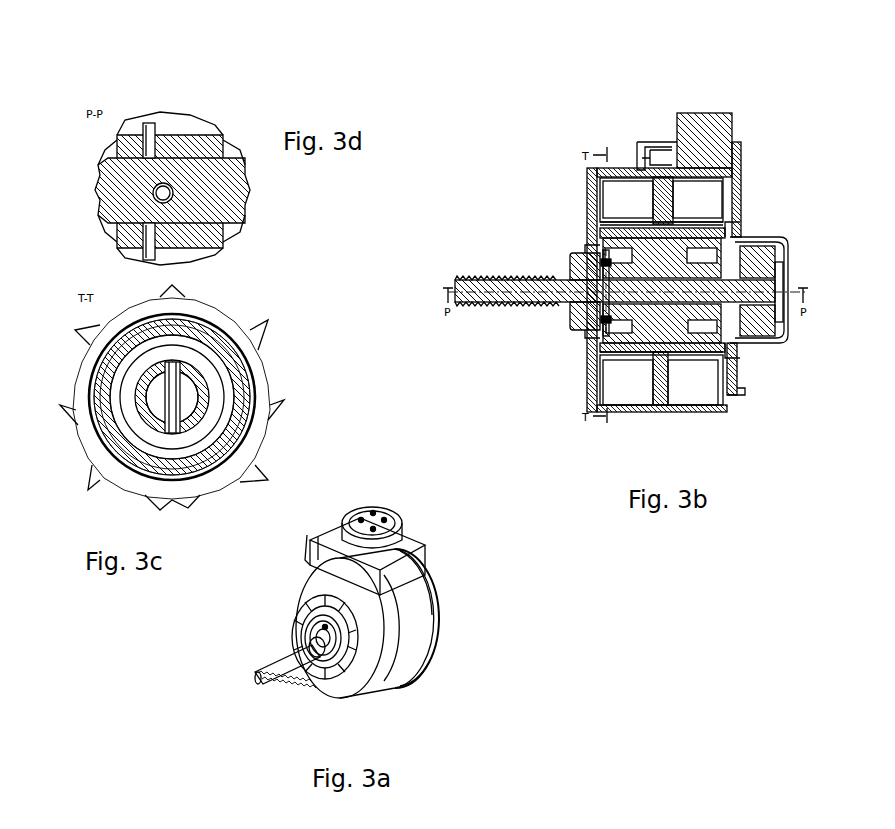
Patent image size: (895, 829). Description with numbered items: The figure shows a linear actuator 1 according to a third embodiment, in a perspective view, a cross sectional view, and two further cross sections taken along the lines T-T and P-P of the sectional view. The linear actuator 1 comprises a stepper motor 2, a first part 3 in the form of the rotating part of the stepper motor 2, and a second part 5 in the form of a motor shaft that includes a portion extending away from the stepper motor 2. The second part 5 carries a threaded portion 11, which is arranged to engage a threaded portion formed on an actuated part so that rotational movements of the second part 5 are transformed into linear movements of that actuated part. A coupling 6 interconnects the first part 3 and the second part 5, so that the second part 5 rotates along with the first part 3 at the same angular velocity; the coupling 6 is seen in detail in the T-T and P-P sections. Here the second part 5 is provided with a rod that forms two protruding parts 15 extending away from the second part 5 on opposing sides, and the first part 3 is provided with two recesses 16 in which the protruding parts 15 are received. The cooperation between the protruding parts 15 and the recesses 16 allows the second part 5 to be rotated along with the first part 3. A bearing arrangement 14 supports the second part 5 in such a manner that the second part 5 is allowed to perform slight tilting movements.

In FIG. 3B, the linear actuator 1 is at (716, 94).
In FIG. 3A, the linear actuator 1 is at (428, 733).
In FIG. 3B, the stepper motor 2 is at (693, 395).
In FIG. 3A, the stepper motor 2 is at (413, 614).
In FIG. 3B, the first part 3 is at (655, 330).
In FIG. 3C, the first part 3 is at (150, 401).
In FIG. 3A, the first part 3 is at (318, 627).
In FIG. 3B, the second part 5 is at (556, 300).
In FIG. 3D, the second part 5 is at (207, 182).
In FIG. 3C, the second part 5 is at (160, 393).
In FIG. 3A, the second part 5 is at (311, 656).
In FIG. 3B, the coupling 6 is at (593, 315).
In FIG. 3D, the coupling 6 is at (148, 114).
In FIG. 3C, the coupling 6 is at (275, 346).
In FIG. 3A, the coupling 6 is at (347, 650).
In FIG. 3B, the threaded portion 11 is at (500, 278).
In FIG. 3A, the threaded portion 11 is at (258, 673).
In FIG. 3B, the bearing arrangement 14 is at (753, 262).
In FIG. 3B, the protruding parts 15 is at (604, 312).
In FIG. 3D, the protruding parts 15 is at (164, 194).
In FIG. 3C, the protruding parts 15 is at (185, 427).
In FIG. 3A, the protruding parts 15 is at (302, 604).
In FIG. 3C, the recesses 16 is at (190, 371).
In FIG. 3A, the recesses 16 is at (352, 640).